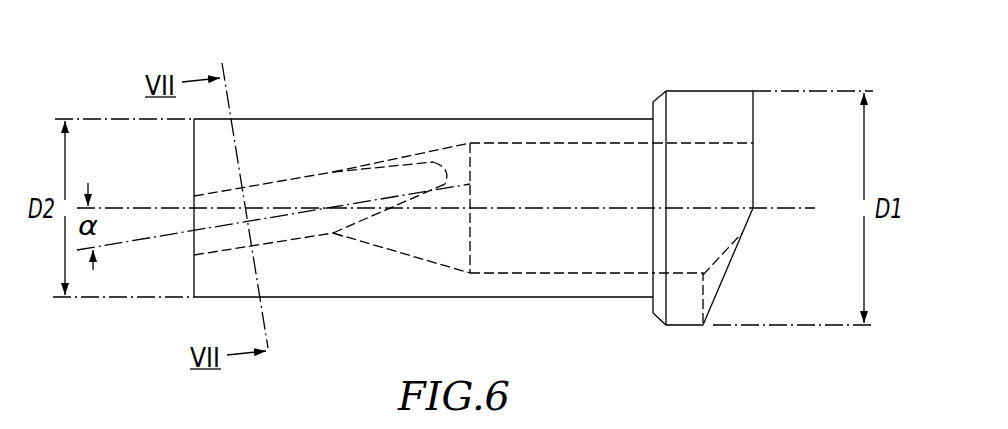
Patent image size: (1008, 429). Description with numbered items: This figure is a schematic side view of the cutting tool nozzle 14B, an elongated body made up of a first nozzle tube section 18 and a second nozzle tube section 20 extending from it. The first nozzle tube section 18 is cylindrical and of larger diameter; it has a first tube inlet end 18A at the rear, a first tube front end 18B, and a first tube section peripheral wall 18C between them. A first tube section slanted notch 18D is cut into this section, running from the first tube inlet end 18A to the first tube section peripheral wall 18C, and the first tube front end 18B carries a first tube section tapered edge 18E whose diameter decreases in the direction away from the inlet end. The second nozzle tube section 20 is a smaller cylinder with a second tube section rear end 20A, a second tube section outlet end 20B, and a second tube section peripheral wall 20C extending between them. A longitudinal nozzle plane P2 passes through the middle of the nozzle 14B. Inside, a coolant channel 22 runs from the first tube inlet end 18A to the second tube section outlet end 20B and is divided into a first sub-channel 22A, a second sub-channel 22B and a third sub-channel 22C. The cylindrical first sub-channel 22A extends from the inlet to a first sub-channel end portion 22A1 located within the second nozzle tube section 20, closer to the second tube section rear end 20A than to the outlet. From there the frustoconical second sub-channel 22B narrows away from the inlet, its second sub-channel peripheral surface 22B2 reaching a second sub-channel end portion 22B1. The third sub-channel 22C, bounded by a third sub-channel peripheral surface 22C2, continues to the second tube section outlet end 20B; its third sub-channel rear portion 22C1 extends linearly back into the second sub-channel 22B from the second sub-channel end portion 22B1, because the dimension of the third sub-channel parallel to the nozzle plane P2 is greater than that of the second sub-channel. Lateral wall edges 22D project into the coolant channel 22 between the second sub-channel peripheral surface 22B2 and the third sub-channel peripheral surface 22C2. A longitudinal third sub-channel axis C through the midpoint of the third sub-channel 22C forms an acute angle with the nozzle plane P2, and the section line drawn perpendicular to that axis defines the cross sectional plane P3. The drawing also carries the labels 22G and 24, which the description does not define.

The cutting tool nozzle 14B is at (742, 53).
The first nozzle tube section 18 is at (679, 89).
The first tube inlet end 18A is at (758, 188).
The first tube front end 18B is at (648, 307).
The first tube section peripheral wall 18C is at (732, 135).
The first tube section slanted notch 18D is at (725, 283).
The first tube section tapered edge 18E is at (658, 326).
The second nozzle tube section 20 is at (469, 116).
The second tube section rear end 20A is at (643, 117).
The second tube section outlet end 20B is at (188, 298).
The second tube section peripheral wall 20C is at (285, 300).
The coolant channel 22 is at (392, 157).
The first sub-channel 22A is at (507, 280).
The first sub-channel end portion 22A1 is at (472, 138).
The second sub-channel 22B is at (458, 276).
The second sub-channel end portion 22B1 is at (330, 238).
The second sub-channel peripheral surface 22B2 is at (456, 138).
The third sub-channel 22C is at (295, 243).
The third sub-channel rear portion 22C1 is at (432, 197).
The third sub-channel peripheral surface 22C2 is at (328, 172).
The lateral wall edges 22D is at (413, 163).
The groove face 22G is at (420, 117).
The helix line 24 is at (200, 197).
The longitudinal nozzle plane P2 is at (580, 208).
The cross sectional plane P3 is at (227, 100).
The longitudinal third sub-channel axis C is at (468, 183).